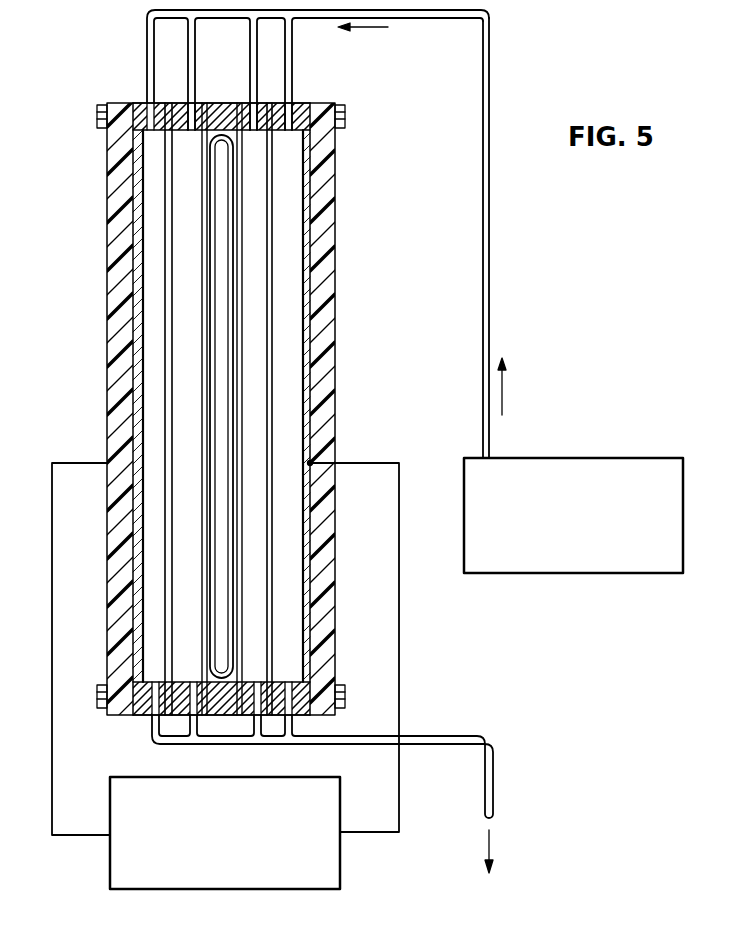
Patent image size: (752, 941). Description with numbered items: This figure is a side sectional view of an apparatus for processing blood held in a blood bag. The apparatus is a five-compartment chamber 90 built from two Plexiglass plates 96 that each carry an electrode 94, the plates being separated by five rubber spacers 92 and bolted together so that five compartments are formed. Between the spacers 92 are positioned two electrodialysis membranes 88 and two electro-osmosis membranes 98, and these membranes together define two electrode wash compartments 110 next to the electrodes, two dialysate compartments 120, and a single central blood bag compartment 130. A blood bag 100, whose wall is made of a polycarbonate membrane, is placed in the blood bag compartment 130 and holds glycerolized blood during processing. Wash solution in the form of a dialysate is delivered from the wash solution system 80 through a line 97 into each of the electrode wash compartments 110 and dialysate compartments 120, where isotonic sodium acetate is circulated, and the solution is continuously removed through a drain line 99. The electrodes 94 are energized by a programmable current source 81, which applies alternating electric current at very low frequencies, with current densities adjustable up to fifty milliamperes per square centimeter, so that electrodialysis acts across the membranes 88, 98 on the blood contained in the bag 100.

The wash solution system 80 is at (597, 573).
The programmable current source 81 is at (330, 862).
The electrodialysis membranes 88 is at (167, 265).
The five-compartment chamber 90 is at (98, 228).
The rubber spacers 92 is at (160, 103).
The electrode 94 is at (133, 432).
The Plexiglass plates 96 is at (110, 340).
The line 97 is at (490, 218).
The electro-osmosis membranes 98 is at (238, 192).
The drain line 99 is at (472, 735).
The blood bag 100 is at (220, 214).
The electrode wash compartments 110 is at (155, 397).
The dialysate compartments 120 is at (258, 375).
The blood bag compartment 130 is at (222, 333).